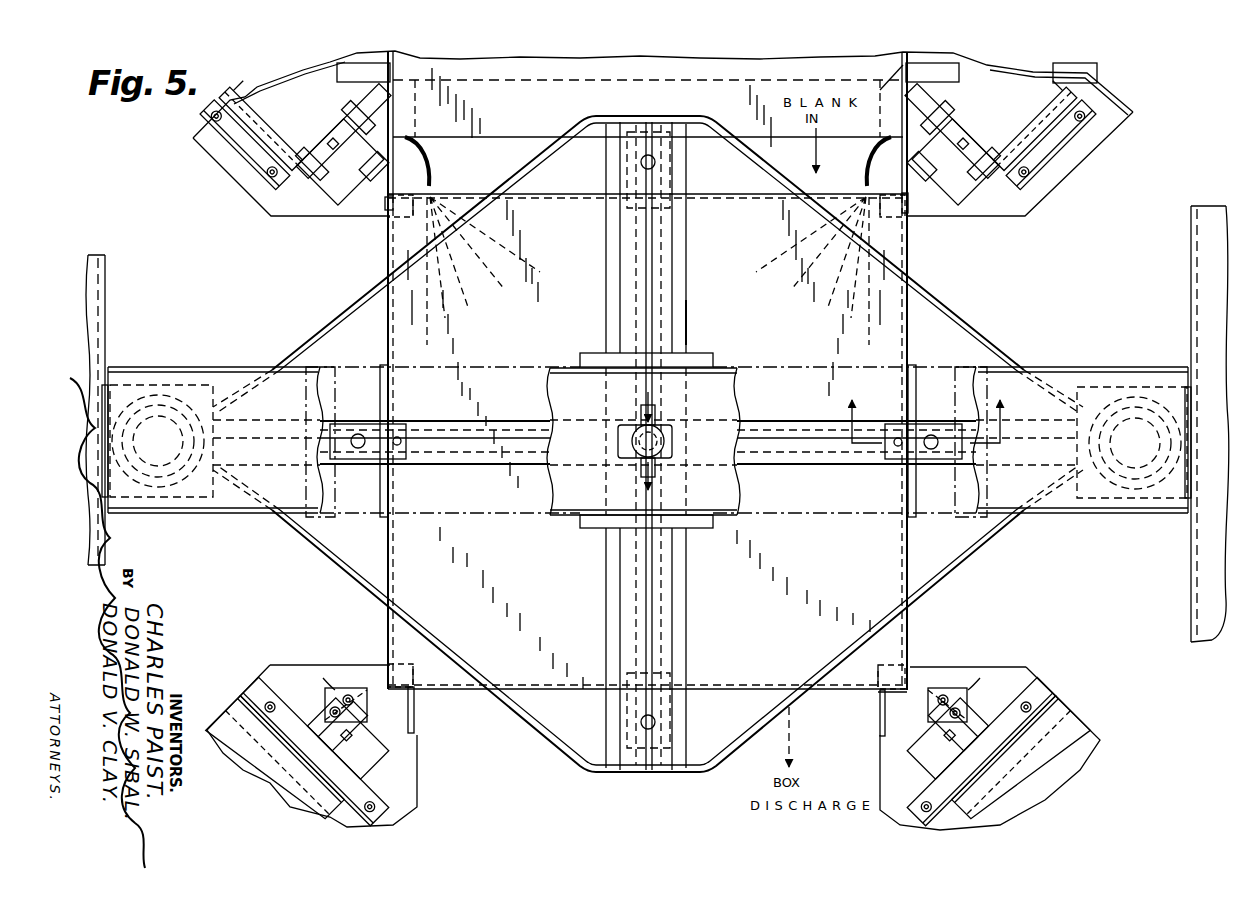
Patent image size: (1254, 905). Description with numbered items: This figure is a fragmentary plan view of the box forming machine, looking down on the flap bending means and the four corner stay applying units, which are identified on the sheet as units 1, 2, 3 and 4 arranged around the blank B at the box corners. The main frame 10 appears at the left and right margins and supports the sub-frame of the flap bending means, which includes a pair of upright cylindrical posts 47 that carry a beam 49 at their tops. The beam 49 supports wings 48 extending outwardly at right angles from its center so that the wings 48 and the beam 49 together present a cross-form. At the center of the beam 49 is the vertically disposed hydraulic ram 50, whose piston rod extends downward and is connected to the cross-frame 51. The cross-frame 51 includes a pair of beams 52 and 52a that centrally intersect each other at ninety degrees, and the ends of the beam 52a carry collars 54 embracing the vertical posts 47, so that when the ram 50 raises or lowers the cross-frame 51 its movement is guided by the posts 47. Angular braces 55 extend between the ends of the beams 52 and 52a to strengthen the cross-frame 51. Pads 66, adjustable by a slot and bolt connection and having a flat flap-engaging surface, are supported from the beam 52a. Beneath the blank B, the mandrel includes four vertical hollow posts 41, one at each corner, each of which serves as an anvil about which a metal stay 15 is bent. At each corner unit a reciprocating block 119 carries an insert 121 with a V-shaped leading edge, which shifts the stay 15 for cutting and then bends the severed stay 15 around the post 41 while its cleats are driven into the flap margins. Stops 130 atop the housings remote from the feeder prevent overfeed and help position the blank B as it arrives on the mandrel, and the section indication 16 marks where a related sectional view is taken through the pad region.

The corner folding unit (view FIG. 1) 1 is at (318, 122).
The corner folding unit (view FIG. 2) 2 is at (983, 118).
The corner folding unit (view FIG. 3) 3 is at (983, 762).
The corner folding unit (view FIG. 4) 4 is at (310, 763).
The frame 10 is at (108, 282).
The metal stay 15 is at (385, 183).
The section line indicator 16 is at (927, 410).
The hollow post 41 is at (393, 207).
The cylindrical post 47 is at (178, 462).
The wing 48 is at (663, 260).
The beam 49 is at (267, 355).
The hydraulic ram 50 is at (657, 428).
The cross-frame 51 is at (690, 320).
The beam 52 is at (637, 260).
The beam 52a is at (468, 430).
The collar 54 is at (180, 393).
The angular brace 55 is at (360, 305).
The pad 66 is at (377, 380).
The reciprocating block 119 is at (342, 173).
The insert 121 is at (397, 136).
The stop 130 is at (347, 688).
The blank B is at (550, 203).